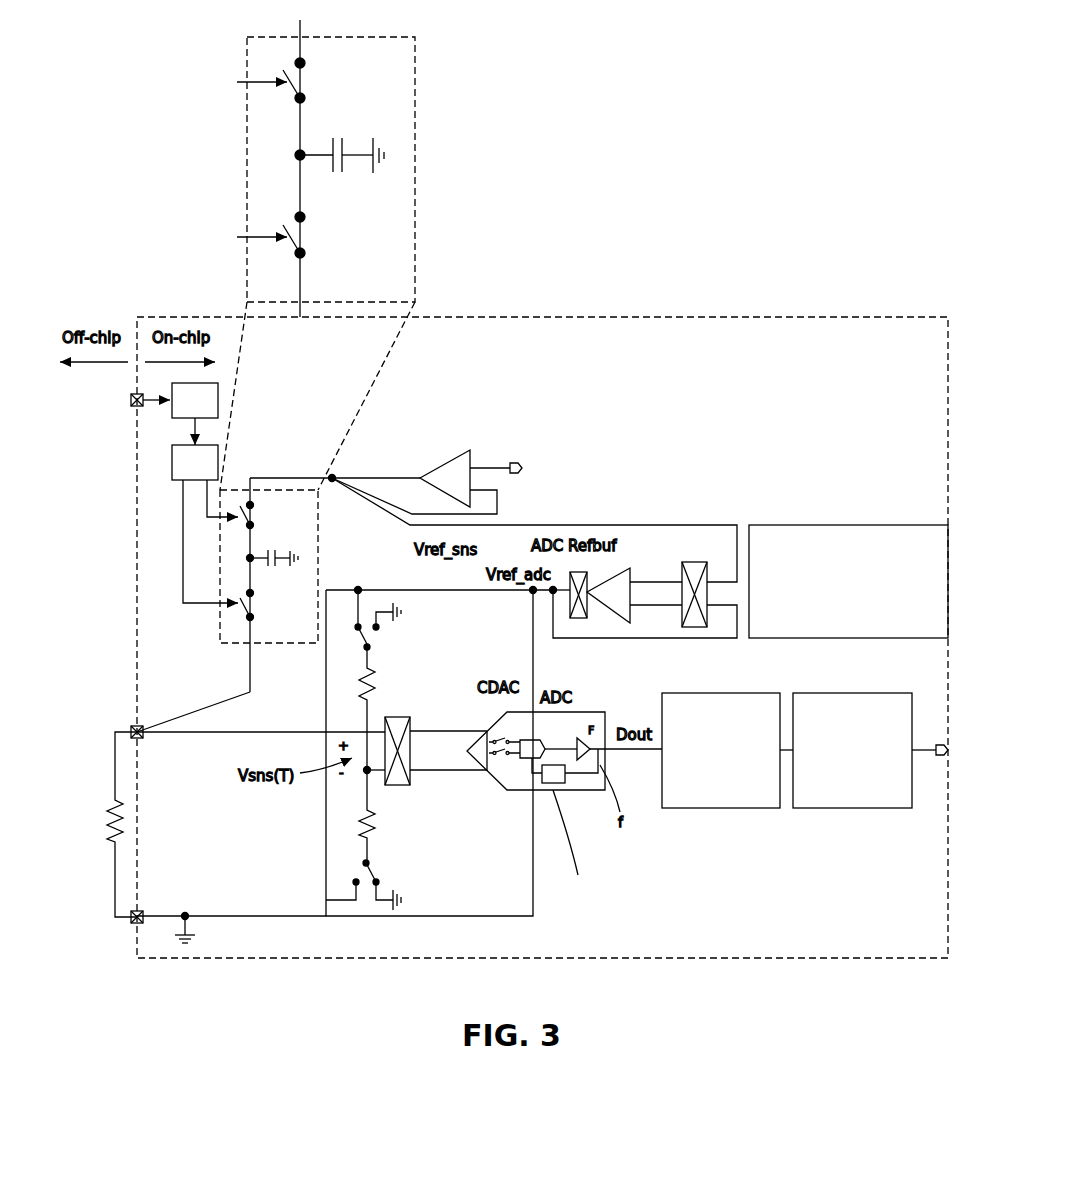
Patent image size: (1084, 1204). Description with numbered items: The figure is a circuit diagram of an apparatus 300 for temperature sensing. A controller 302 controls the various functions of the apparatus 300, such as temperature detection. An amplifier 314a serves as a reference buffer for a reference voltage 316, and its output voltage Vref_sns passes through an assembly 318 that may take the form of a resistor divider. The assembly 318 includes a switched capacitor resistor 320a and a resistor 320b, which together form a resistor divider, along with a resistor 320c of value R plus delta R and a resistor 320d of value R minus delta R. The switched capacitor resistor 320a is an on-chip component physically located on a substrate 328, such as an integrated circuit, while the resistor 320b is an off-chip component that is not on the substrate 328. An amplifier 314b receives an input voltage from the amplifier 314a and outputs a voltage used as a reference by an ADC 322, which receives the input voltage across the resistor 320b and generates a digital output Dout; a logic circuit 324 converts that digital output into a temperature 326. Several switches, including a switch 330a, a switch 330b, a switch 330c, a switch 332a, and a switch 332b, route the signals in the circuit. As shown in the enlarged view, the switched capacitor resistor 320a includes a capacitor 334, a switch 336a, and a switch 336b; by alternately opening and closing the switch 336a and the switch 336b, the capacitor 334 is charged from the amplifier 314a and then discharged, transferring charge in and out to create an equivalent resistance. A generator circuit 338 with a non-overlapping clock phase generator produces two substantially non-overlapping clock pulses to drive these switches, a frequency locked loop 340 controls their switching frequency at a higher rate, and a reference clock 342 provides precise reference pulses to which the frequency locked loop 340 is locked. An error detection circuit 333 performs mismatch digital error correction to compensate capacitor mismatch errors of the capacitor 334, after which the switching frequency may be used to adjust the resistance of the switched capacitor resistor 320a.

The apparatus 300 is at (723, 290).
The controller 302 is at (847, 525).
The amplifier 314a is at (447, 462).
The amplifier 314b is at (625, 568).
The reference voltage 316 is at (557, 442).
The assembly 318 is at (117, 575).
The switched capacitor resistor 320a is at (207, 617).
The resistor 320b is at (67, 848).
The resistor 320c is at (347, 680).
The resistor 320d is at (347, 827).
The ADC 322 is at (555, 790).
The logic circuit 324 is at (850, 808).
The temperature 326 is at (942, 768).
The substrate 328 is at (792, 390).
The switch 330a is at (700, 628).
The switch 330b is at (578, 619).
The chopper switch 330c is at (411, 779).
The switch 332a is at (350, 611).
The switch 332b is at (385, 875).
The error detection circuit 333 is at (718, 808).
The capacitor 334 is at (347, 176).
The switch 336a is at (283, 76).
The switch 336b is at (283, 231).
The generator circuit 338 is at (178, 483).
The frequency locked loop 340 is at (177, 412).
The reference clock 342 is at (163, 407).